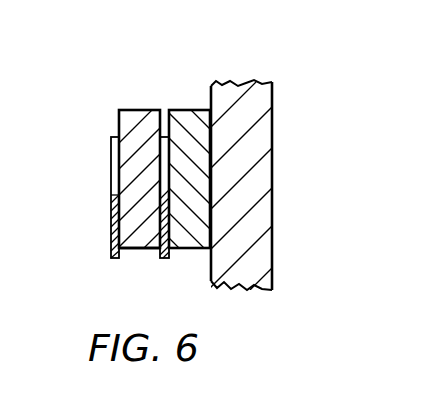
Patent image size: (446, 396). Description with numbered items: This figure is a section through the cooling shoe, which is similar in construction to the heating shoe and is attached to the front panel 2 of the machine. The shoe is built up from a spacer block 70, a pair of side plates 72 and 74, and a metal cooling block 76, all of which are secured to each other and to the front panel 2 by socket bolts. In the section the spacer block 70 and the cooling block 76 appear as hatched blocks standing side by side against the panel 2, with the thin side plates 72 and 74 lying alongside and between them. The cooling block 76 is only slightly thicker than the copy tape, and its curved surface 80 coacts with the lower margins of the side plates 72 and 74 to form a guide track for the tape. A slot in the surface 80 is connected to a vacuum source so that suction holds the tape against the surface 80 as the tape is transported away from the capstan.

The front panel 2 is at (247, 267).
The spacer block 70 is at (185, 117).
The side plate 72 is at (111, 216).
The side plate 74 is at (165, 257).
The cooling block 76 is at (141, 116).
The curved surface 80 is at (141, 249).